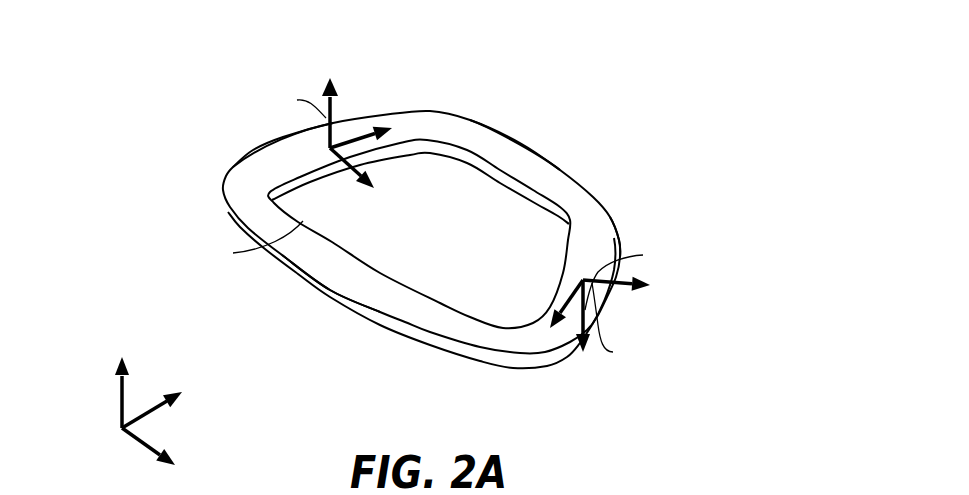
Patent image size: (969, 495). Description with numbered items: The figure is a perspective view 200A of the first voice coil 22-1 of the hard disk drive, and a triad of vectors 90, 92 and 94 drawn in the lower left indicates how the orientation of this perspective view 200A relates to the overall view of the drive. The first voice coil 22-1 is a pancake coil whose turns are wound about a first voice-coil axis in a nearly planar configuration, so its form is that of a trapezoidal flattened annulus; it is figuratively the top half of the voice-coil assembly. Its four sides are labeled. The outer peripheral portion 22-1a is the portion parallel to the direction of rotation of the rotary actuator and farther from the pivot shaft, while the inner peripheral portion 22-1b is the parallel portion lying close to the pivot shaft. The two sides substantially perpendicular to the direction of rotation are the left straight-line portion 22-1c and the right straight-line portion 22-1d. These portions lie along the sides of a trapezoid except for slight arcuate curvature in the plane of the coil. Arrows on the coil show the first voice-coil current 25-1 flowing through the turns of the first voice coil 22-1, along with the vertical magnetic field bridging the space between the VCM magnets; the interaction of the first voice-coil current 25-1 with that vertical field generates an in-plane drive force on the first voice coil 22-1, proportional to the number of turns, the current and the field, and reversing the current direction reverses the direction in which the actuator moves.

The perspective view 200A is at (122, 47).
The first voice coil 22-1 is at (525, 51).
The outer peripheral portion 22-1a is at (350, 280).
The inner peripheral portion 22-1b is at (527, 170).
The left straight-line portion 22-1c is at (306, 160).
The right straight-line portion 22-1d is at (598, 233).
The first voice-coil current 25-1 is at (303, 221).
The vector of triad 90 is at (140, 443).
The vector of triad 92 is at (141, 411).
The vector of triad 94 is at (118, 400).